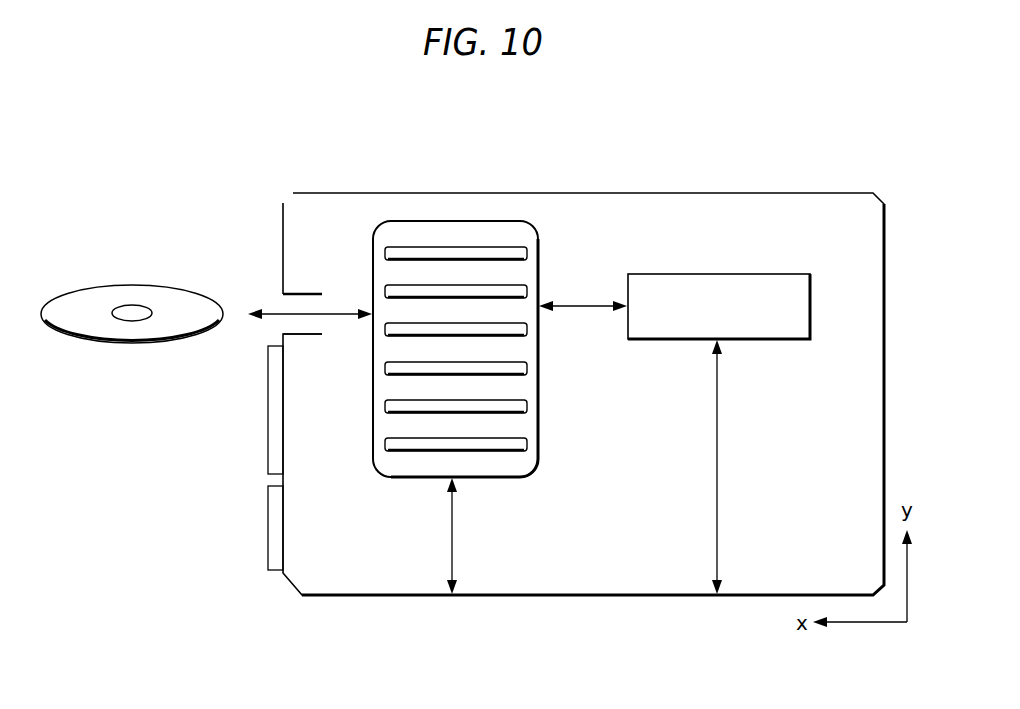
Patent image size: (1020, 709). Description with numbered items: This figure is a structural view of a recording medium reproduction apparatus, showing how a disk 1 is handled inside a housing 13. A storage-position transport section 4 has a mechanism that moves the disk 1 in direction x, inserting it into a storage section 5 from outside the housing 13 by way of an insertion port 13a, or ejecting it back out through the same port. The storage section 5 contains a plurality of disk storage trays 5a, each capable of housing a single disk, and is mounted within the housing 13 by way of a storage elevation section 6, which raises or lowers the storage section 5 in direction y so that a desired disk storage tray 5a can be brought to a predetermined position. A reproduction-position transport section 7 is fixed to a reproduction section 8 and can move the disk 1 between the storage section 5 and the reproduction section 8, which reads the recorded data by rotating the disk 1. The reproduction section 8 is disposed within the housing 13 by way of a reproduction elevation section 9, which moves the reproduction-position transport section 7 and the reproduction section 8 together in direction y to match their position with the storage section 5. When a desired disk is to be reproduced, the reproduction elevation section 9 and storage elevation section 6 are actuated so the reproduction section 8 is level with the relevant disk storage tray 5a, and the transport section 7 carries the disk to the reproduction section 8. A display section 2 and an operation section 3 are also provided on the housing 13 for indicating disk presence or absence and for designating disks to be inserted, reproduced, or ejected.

The disk 1 is at (82, 291).
The display section 2 is at (268, 412).
The operation section 3 is at (268, 531).
The storage-position transport section 4 is at (272, 313).
The storage section 5 is at (476, 221).
The disk storage tray 5a is at (438, 247).
The storage elevation section 6 is at (452, 563).
The reproduction-position transport section 7 is at (598, 306).
The reproduction section 8 is at (697, 274).
The reproduction elevation section 9 is at (717, 565).
The housing 13 is at (806, 193).
The insertion port 13a is at (272, 283).